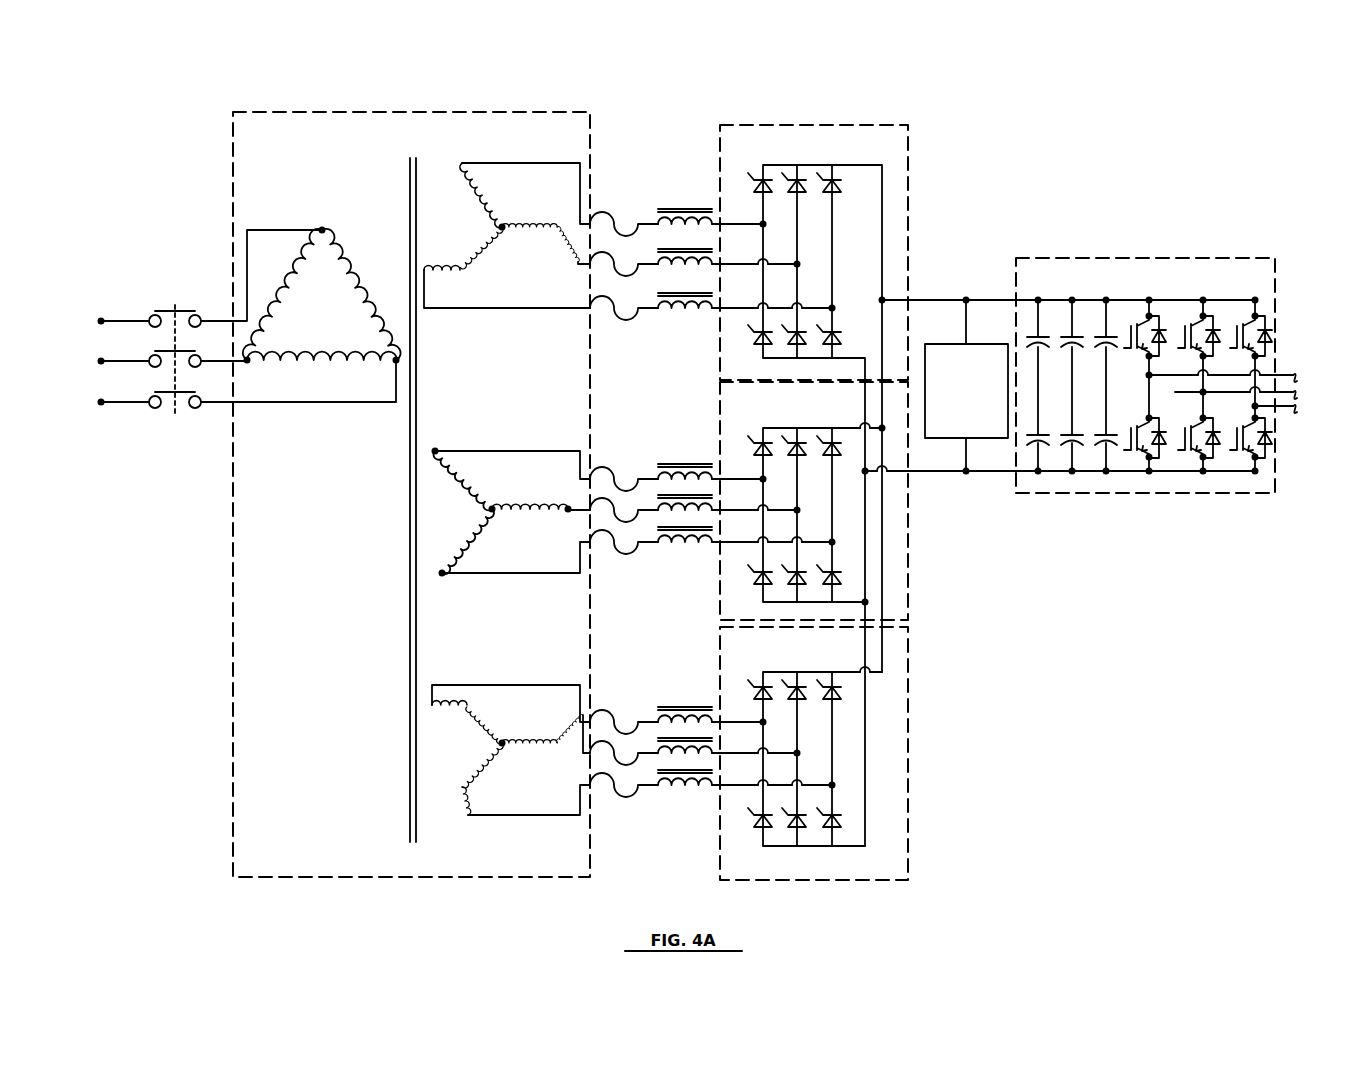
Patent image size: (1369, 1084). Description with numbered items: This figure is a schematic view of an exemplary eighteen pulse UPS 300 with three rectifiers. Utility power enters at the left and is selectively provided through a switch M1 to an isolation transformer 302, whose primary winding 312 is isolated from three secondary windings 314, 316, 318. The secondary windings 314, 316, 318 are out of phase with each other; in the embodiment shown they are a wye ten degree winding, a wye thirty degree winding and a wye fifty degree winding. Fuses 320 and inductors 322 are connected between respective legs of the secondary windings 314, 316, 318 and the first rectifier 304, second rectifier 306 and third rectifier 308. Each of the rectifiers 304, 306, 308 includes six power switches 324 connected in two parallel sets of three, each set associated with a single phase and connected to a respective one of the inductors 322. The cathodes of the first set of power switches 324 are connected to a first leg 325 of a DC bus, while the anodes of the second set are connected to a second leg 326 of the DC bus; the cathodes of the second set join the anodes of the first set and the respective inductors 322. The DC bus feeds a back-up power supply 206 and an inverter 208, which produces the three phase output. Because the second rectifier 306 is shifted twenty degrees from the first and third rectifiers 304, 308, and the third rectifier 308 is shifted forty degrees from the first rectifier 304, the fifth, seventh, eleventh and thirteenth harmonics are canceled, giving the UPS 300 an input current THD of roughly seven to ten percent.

The eighteen pulse UPS 300 is at (232, 92).
The isolation transformer 302 is at (413, 112).
The primary winding 312 is at (322, 227).
The secondary winding 314 is at (504, 234).
The secondary winding 316 is at (495, 505).
The secondary winding 318 is at (505, 739).
The fuses 320 is at (614, 212).
The inductors 322 is at (690, 208).
The power switches 324 is at (748, 178).
The first rectifier 304 is at (908, 160).
The second rectifier 306 is at (908, 545).
The third rectifier 308 is at (908, 690).
The first leg of DC bus 325 is at (926, 300).
The second leg of DC bus 326 is at (932, 471).
The back-up power supply 206 is at (983, 343).
The inverter 208 is at (1118, 257).
The switch M1 is at (168, 308).